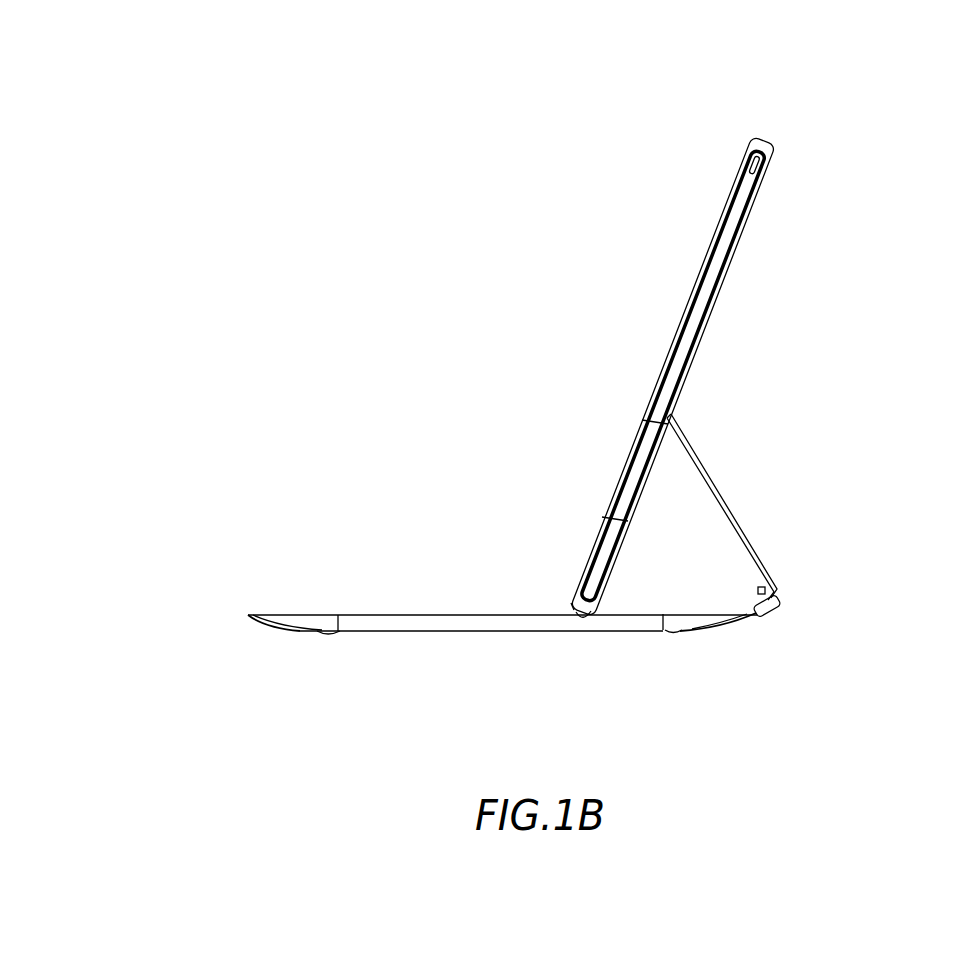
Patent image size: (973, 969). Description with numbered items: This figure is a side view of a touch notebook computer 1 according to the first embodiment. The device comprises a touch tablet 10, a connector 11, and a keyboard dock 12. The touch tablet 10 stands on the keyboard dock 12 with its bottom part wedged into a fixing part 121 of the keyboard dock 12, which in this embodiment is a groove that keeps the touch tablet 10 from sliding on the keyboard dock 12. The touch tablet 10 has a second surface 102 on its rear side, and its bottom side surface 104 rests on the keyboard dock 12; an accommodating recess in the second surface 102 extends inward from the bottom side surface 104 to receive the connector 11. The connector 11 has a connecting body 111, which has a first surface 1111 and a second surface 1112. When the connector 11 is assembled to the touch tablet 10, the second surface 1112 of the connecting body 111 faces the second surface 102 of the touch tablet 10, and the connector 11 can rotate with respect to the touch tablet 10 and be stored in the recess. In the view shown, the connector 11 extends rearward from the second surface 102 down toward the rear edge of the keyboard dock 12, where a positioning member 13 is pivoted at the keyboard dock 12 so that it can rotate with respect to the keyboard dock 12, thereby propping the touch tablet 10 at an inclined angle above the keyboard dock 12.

The touch notebook computer 1 is at (926, 49).
The touch tablet 10 is at (772, 140).
The second surface 102 is at (684, 380).
The bottom side surface 104 is at (577, 618).
The connector 11 is at (716, 431).
The connecting body 111 is at (716, 493).
The first surface 1111 is at (723, 499).
The second surface 1112 is at (724, 503).
The keyboard dock 12 is at (272, 627).
The fixing part 121 is at (584, 619).
The positioning member 13 is at (778, 610).